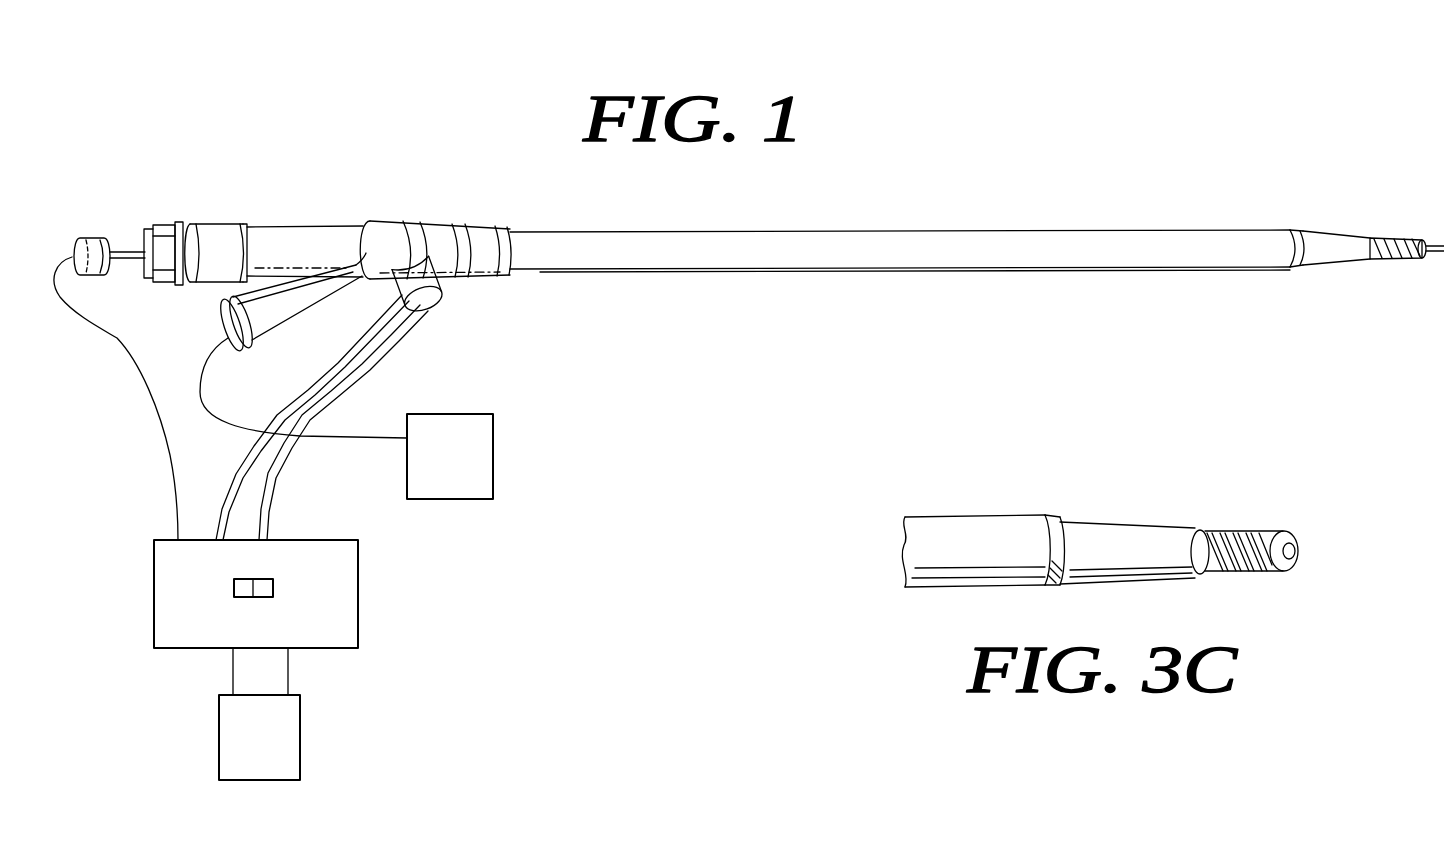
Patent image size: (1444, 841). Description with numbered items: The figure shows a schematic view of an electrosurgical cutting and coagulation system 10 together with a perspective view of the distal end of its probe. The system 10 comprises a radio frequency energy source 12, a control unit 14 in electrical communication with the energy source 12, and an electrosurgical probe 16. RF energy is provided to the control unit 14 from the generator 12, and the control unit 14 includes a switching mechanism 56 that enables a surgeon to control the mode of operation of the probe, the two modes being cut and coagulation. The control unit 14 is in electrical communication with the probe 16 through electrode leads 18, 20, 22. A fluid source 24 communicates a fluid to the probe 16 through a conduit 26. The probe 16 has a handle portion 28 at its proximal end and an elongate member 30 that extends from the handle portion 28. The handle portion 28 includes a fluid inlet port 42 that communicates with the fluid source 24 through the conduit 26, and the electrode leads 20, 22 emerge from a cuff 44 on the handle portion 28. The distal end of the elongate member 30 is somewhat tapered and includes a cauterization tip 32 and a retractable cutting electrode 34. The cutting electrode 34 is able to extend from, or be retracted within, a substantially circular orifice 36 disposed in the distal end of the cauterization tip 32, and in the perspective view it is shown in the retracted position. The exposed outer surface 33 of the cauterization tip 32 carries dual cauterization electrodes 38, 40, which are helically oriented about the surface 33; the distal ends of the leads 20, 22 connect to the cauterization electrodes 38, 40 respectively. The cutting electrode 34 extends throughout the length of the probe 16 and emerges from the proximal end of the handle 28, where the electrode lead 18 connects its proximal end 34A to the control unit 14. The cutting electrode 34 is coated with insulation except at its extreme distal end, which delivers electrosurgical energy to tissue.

In FIG. 1, the electrosurgical cutting and coagulation system 10 is at (545, 400).
In FIG. 1, the radio frequency energy source 12 is at (277, 770).
In FIG. 1, the control unit 14 is at (358, 596).
In FIG. 1, the electrosurgical probe 16 is at (588, 230).
In FIG. 1, the electrode lead 18 is at (117, 340).
In FIG. 1, the electrode lead 20 is at (330, 373).
In FIG. 1, the electrode lead 22 is at (367, 381).
In FIG. 1, the fluid source 24 is at (458, 490).
In FIG. 1, the conduit 26 is at (336, 440).
In FIG. 1, the handle portion 28 is at (297, 231).
In FIG. 1, the elongate member 30 is at (765, 233).
In FIG. 3C, the elongate member 30 is at (962, 525).
In FIG. 1, the cauterization tip 32 is at (1387, 241).
In FIG. 3C, the cauterization tip 32 is at (1265, 576).
In FIG. 3C, the exposed outer surface 33 is at (1205, 575).
In FIG. 1, the cutting electrode 34 is at (1441, 238).
In FIG. 1, the proximal end of cutting electrode 34A is at (122, 246).
In FIG. 3C, the substantially circular orifice 36 is at (1305, 552).
In FIG. 3C, the cauterization electrode 38 is at (1230, 530).
In FIG. 3C, the cauterization electrode 40 is at (1243, 530).
In FIG. 1, the fluid inlet port 42 is at (222, 322).
In FIG. 1, the cuff 44 is at (433, 297).
In FIG. 1, the switching mechanism 56 is at (254, 598).